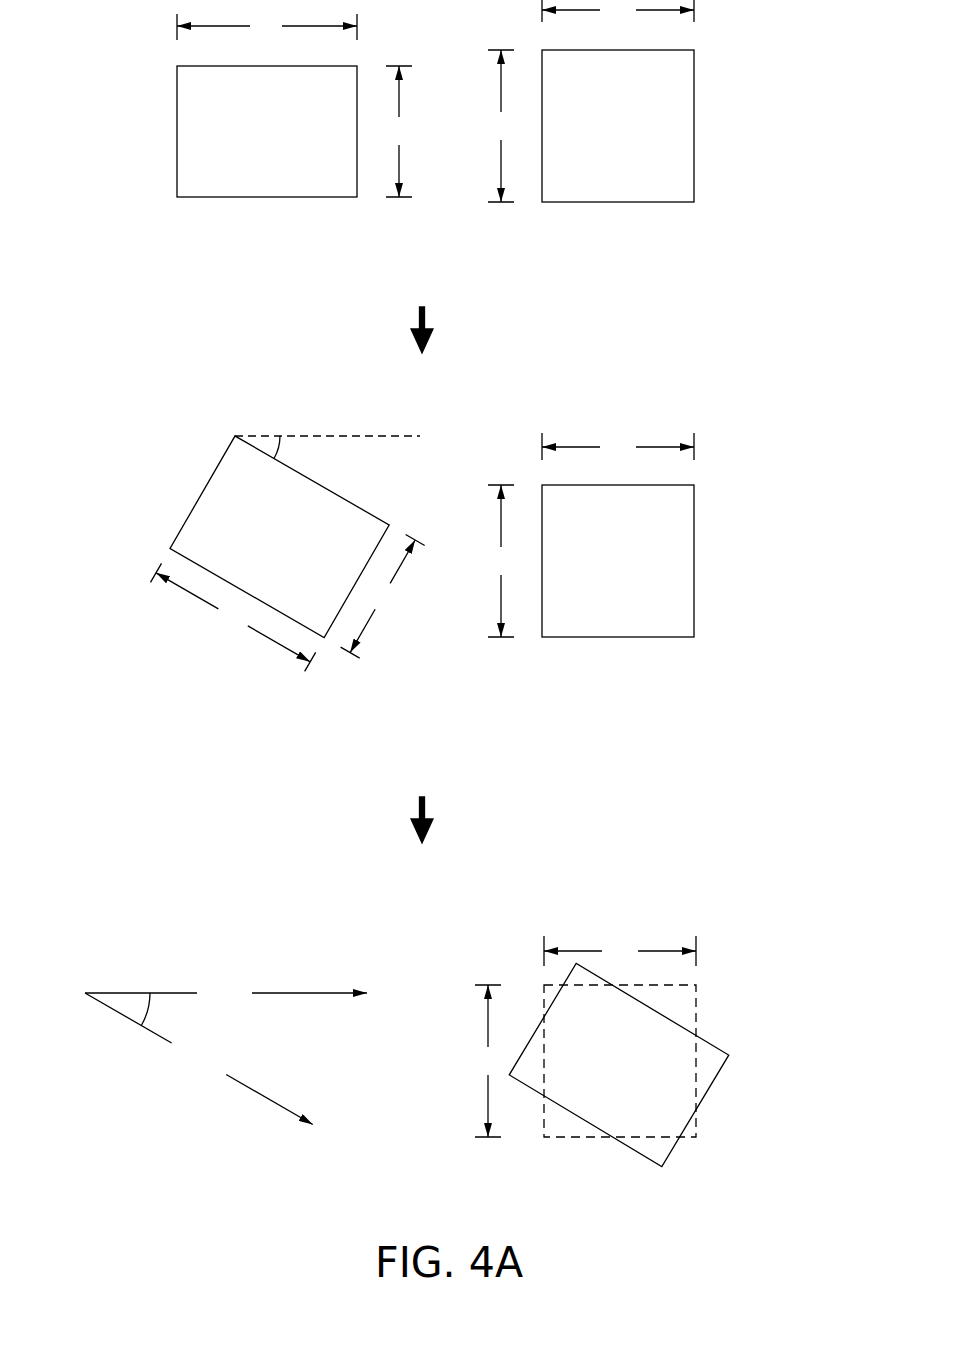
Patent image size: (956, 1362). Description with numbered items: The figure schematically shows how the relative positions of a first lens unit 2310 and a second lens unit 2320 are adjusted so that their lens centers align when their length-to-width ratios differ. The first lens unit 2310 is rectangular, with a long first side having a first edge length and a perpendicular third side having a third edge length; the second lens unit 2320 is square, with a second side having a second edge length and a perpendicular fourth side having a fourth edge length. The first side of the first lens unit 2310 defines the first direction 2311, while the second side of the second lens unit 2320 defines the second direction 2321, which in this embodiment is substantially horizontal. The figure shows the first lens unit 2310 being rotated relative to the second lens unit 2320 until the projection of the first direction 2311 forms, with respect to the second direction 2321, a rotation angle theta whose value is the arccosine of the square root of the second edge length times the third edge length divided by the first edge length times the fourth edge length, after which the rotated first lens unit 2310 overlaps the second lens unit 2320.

The first lens unit 2310 is at (207, 66).
The second lens unit 2320 is at (655, 50).
The second direction 2321 is at (226, 1004).
The first direction 2311 is at (199, 1059).